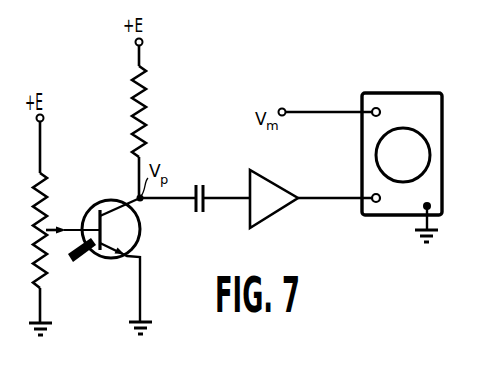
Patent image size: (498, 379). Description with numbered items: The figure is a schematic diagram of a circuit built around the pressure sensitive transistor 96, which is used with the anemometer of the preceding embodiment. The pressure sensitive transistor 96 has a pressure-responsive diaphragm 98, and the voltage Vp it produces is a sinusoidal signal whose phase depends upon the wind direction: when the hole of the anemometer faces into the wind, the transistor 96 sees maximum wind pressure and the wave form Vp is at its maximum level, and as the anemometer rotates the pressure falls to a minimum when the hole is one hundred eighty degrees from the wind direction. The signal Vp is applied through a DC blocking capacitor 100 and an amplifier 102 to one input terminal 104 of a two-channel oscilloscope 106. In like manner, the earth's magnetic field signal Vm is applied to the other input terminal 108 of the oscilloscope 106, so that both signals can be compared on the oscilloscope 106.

The pressure sensitive transistor 96 is at (107, 200).
The pressure-responsive diaphragm 98 is at (81, 261).
The DC blocking capacitor 100 is at (204, 185).
The amplifier 102 is at (277, 208).
The input terminal 104 is at (377, 202).
The two-channel oscilloscope 106 is at (438, 131).
The input terminal 108 is at (377, 108).